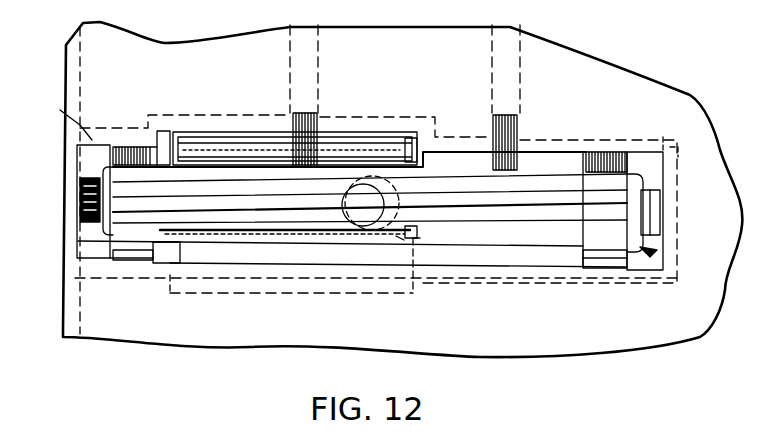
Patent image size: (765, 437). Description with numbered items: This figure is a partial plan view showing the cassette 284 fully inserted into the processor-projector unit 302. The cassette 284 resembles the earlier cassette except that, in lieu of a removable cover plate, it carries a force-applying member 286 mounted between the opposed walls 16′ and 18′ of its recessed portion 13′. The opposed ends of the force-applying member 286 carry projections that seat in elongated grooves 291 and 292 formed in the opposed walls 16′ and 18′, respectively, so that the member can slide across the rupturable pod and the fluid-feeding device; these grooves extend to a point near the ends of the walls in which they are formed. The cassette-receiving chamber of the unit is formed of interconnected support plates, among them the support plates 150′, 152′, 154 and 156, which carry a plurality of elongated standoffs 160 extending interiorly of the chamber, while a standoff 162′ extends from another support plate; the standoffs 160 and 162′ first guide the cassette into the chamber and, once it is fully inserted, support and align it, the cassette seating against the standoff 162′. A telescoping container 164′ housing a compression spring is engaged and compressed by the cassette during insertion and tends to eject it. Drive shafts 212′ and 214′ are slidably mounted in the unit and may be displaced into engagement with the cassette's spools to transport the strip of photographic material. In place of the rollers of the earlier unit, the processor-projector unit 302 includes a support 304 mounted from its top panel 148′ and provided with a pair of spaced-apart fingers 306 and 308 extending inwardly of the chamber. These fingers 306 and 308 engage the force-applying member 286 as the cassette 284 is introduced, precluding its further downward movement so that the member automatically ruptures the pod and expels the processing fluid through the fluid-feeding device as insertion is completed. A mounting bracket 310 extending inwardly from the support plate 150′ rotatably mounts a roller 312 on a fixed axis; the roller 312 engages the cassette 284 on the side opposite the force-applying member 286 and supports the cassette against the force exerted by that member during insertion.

The processor-projector unit 302 is at (151, 354).
The support plate 150′ is at (548, 140).
The support plate 152′ is at (546, 283).
The standoff 162′ is at (356, 124).
The support plate 156 is at (670, 178).
The top panel 148′ is at (693, 336).
The support plate 154 is at (68, 155).
The standoff 160 is at (130, 163).
The roller 312 is at (230, 147).
The mounting bracket 310 is at (375, 138).
The drive shaft 214′ is at (333, 117).
The drive shaft 212′ is at (491, 123).
The support 304 is at (270, 265).
The recessed portion 13′ is at (135, 217).
The force-applying member 286 is at (395, 200).
The telescoping container 164′ is at (403, 227).
The opposed wall 16′ is at (400, 234).
The elongated groove 292 is at (165, 218).
The opposed wall 18′ is at (128, 250).
The finger 306 is at (170, 233).
The finger 308 is at (403, 240).
The elongated groove 291 is at (417, 238).
The cassette 284 is at (653, 253).